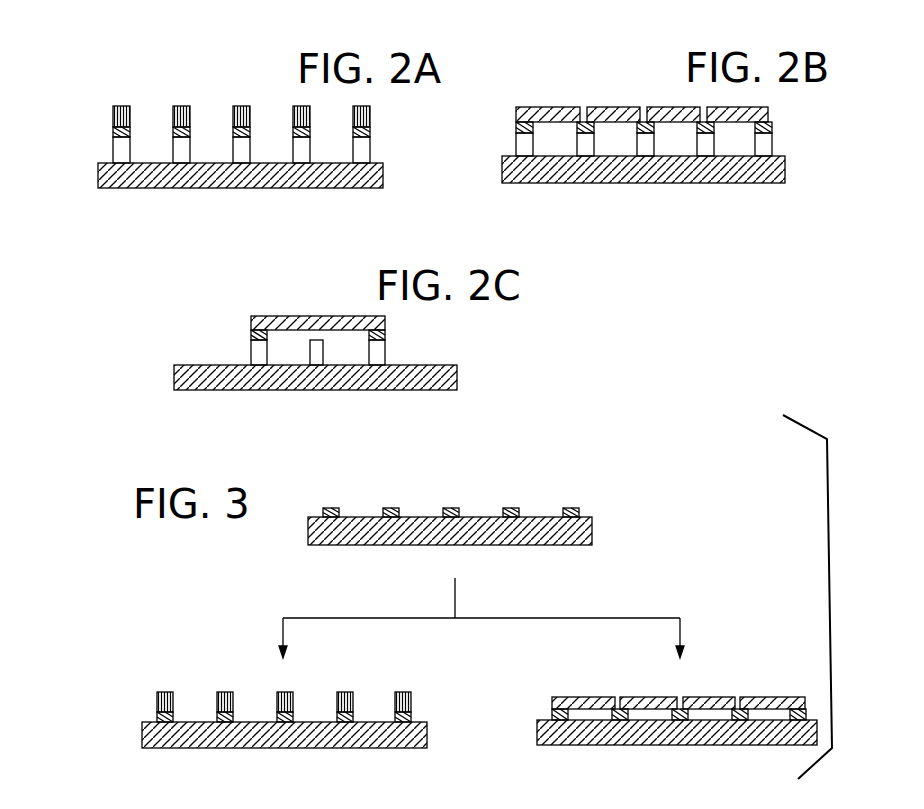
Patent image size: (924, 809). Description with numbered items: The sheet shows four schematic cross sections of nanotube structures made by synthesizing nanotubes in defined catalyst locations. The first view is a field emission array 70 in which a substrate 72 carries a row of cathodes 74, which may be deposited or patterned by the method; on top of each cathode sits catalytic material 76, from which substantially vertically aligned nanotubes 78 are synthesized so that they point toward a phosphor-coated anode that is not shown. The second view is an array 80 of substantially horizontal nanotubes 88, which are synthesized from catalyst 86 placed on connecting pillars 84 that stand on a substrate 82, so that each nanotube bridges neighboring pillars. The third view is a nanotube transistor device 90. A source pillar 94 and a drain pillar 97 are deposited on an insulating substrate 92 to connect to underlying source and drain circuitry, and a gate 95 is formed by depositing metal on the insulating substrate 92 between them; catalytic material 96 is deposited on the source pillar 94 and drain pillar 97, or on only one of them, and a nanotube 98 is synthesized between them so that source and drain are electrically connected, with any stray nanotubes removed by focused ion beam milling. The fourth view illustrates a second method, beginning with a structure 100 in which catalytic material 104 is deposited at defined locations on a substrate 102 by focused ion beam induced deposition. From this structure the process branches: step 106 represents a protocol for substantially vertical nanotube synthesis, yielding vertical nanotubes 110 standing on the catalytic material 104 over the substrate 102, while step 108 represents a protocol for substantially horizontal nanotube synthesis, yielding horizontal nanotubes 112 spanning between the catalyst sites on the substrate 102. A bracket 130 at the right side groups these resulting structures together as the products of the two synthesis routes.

In FIG. 2A, the pillar array structure 70 is at (212, 73).
In FIG. 2A, the substrate 72 is at (98, 170).
In FIG. 2A, the cathodes 74 is at (118, 148).
In FIG. 2A, the catalytic material 76 is at (113, 130).
In FIG. 2A, the nanotubes 78 is at (113, 108).
In FIG. 2B, the capped pillar structure 80 is at (617, 57).
In FIG. 2B, the substrate 82 is at (502, 166).
In FIG. 2B, the connecting pillars 84 is at (521, 140).
In FIG. 2B, the catalyst 86 is at (516, 128).
In FIG. 2B, the horizontal nanotubes 88 is at (548, 107).
In FIG. 2C, the nanotube transistor device 90 is at (328, 279).
In FIG. 2C, the insulating substrate 92 is at (175, 373).
In FIG. 2C, the source pillar 94 is at (256, 352).
In FIG. 2C, the gate 95 is at (310, 348).
In FIG. 2C, the catalytic material 96 is at (251, 335).
In FIG. 2C, the drain pillar 97 is at (381, 352).
In FIG. 2C, the nanotube 98 is at (270, 316).
In FIG. 3, the structure 100 is at (552, 461).
In FIG. 3, the substrate 102 is at (592, 540).
In FIG. 3, the catalytic material 104 is at (578, 512).
In FIG. 3, the step 106 is at (339, 621).
In FIG. 3, the step 108 is at (615, 621).
In FIG. 3, the grown pillar tips 110 is at (157, 700).
In FIG. 3, the grown caps 112 is at (590, 697).
In FIG. 3, the bracket grouping 130 is at (794, 612).